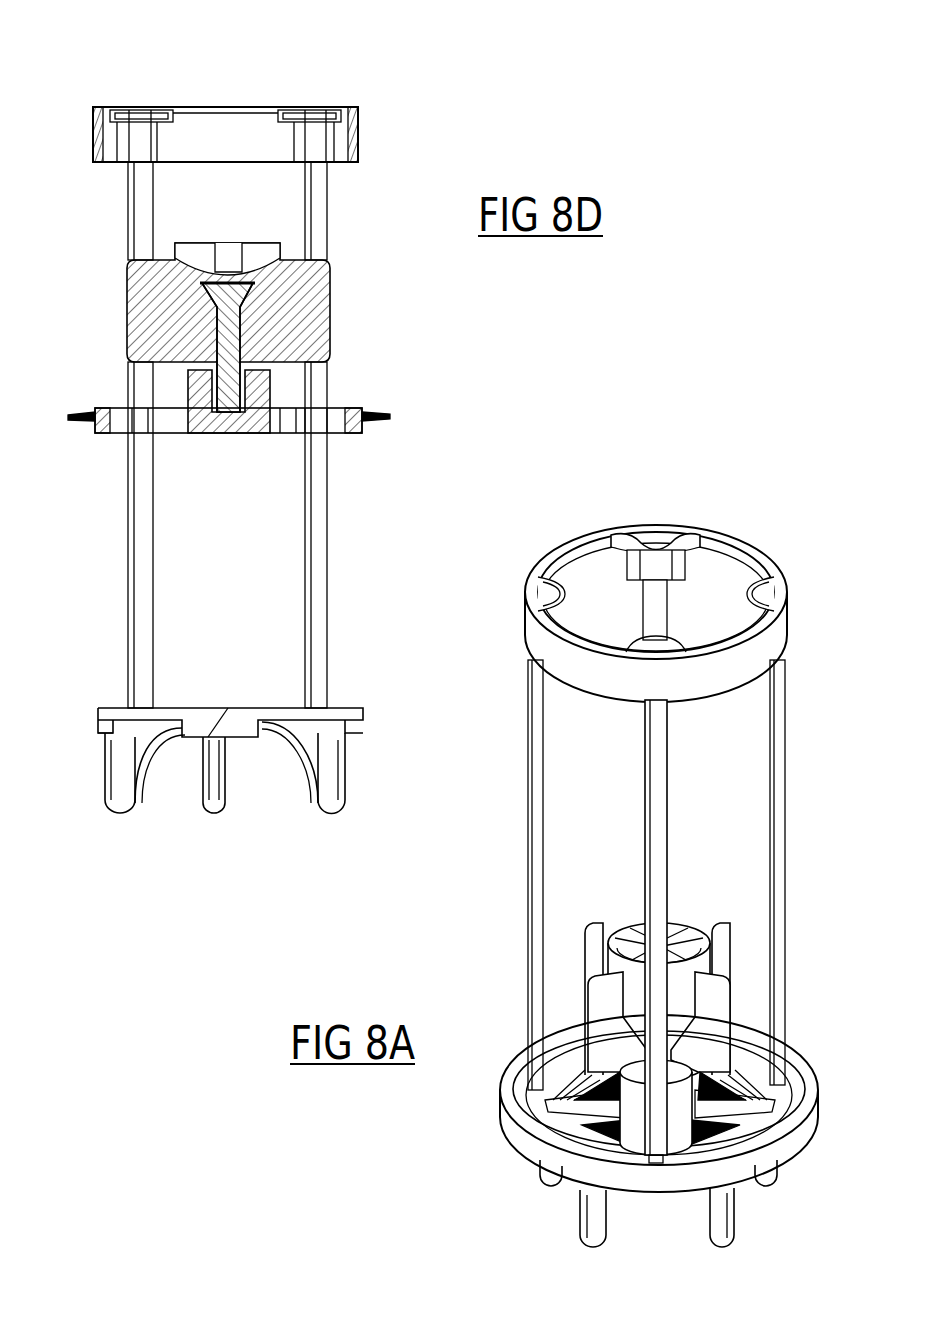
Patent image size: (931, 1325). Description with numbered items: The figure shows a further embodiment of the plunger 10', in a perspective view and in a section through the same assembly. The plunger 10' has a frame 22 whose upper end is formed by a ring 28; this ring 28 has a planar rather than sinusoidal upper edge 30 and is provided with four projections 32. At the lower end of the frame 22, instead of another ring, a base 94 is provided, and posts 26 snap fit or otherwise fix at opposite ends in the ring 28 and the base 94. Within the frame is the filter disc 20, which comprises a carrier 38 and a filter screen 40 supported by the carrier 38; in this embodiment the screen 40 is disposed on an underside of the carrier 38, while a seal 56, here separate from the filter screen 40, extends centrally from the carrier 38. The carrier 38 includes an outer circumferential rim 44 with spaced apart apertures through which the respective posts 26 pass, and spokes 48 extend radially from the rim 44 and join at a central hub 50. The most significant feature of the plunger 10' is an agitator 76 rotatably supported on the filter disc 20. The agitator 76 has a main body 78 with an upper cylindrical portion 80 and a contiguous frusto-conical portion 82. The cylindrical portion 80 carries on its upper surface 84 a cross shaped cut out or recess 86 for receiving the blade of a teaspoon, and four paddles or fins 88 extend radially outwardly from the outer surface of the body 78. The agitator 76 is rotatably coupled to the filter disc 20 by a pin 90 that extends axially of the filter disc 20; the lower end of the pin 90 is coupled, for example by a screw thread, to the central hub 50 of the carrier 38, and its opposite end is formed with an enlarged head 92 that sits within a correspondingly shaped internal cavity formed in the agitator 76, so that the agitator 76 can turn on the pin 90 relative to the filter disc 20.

In FIG. 8D, the plunger 10' is at (238, 46).
In FIG. 8D, the filter disc 20 is at (368, 404).
In FIG. 8A, the filter disc 20 is at (752, 1045).
In FIG. 8D, the frame 22 is at (97, 125).
In FIG. 8A, the frame 22 is at (512, 788).
In FIG. 8D, the posts 26 is at (144, 539).
In FIG. 8A, the posts 26 is at (775, 733).
In FIG. 8D, the ring 28 is at (356, 134).
In FIG. 8A, the ring 28 is at (782, 625).
In FIG. 8A, the upper edge 30 is at (572, 548).
In FIG. 8A, the projections 32 is at (732, 548).
In FIG. 8D, the carrier 38 is at (356, 436).
In FIG. 8A, the carrier 38 is at (545, 1147).
In FIG. 8D, the filter screen 40 is at (132, 435).
In FIG. 8A, the filter screen 40 is at (715, 1148).
In FIG. 8A, the outer circumferential rim 44 is at (747, 1130).
In FIG. 8A, the spokes 48 is at (597, 1113).
In FIG. 8D, the central hub 50 is at (272, 388).
In FIG. 8A, the central hub 50 is at (632, 1097).
In FIG. 8D, the seal 56 is at (384, 418).
In FIG. 8D, the agitator 76 is at (334, 288).
In FIG. 8A, the agitator 76 is at (608, 915).
In FIG. 8A, the main body 78 is at (672, 930).
In FIG. 8A, the upper cylindrical portion 80 is at (608, 967).
In FIG. 8A, the frusto-conical portion 82 is at (745, 1070).
In FIG. 8A, the upper surface 84 is at (623, 940).
In FIG. 8D, the cross shaped cut out or recess 86 is at (228, 253).
In FIG. 8A, the cross shaped cut out or recess 86 is at (631, 935).
In FIG. 8A, the paddles or fins 88 is at (718, 947).
In FIG. 8D, the pin 90 is at (229, 325).
In FIG. 8D, the enlarged head 92 is at (298, 258).
In FIG. 8D, the base 94 is at (130, 739).
In FIG. 8A, the base 94 is at (607, 1200).